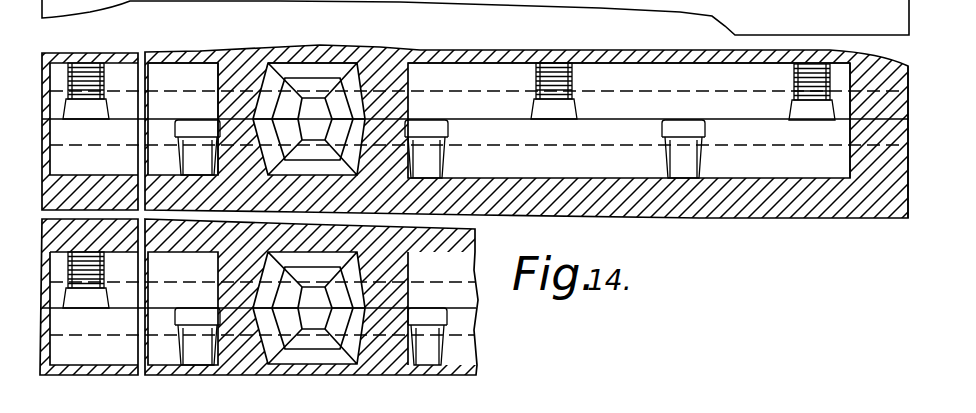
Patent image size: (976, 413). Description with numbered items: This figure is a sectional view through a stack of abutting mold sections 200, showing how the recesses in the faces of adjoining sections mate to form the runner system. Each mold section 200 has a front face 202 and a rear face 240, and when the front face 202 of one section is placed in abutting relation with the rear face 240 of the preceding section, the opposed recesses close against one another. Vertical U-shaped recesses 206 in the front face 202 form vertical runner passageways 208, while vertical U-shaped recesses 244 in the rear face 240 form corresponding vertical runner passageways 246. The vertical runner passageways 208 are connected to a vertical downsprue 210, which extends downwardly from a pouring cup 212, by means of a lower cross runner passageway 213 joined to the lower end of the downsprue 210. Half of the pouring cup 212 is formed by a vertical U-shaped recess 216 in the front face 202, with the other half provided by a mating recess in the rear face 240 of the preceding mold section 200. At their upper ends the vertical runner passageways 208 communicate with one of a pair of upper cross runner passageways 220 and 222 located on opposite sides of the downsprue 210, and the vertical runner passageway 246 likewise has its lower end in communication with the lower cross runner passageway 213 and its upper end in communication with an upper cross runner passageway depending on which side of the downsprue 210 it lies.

The mold section 200 is at (893, 58).
The front face 202 is at (893, 125).
The vertical U-shaped recesses 206 is at (100, 78).
The vertical runner passageways 208 is at (62, 82).
The vertical downsprue 210 is at (352, 84).
The pouring cup 212 is at (328, 55).
The lower cross runner passageway 213 is at (492, 104).
The vertical U-shaped recess 216 is at (247, 67).
The upper cross runner passageway 220 is at (683, 53).
The upper cross runner passageway 222 is at (198, 57).
The rear face 240 is at (387, 118).
The vertical U-shaped recesses 244 is at (450, 172).
The vertical runner passageway 246 is at (452, 140).